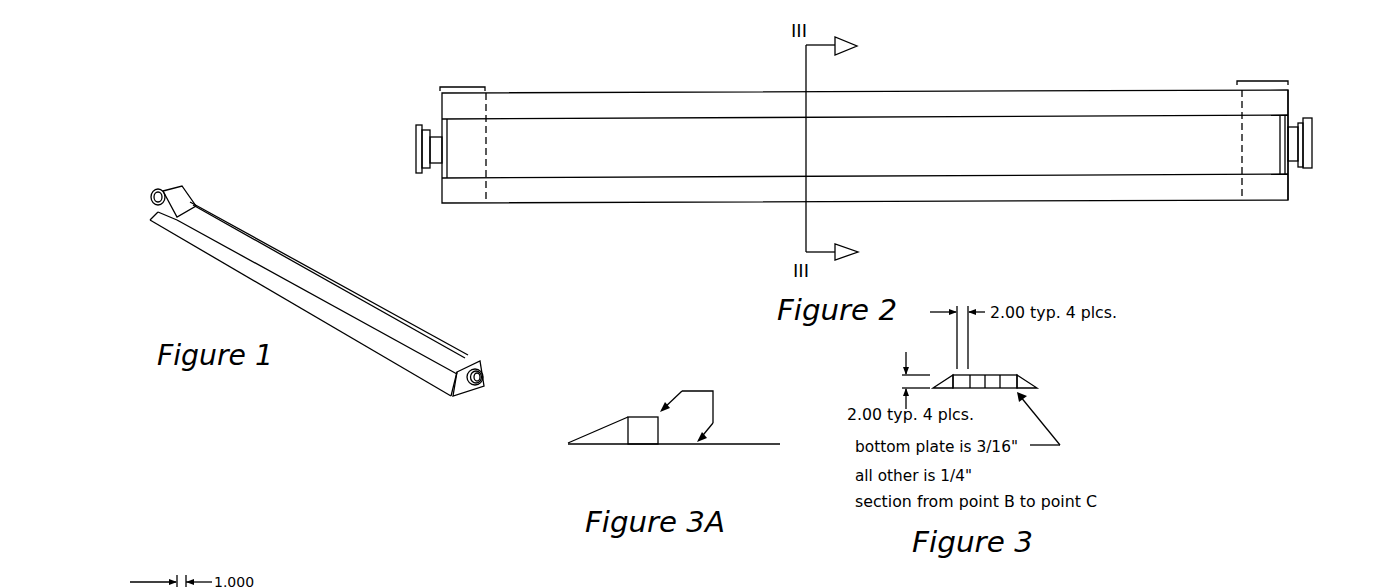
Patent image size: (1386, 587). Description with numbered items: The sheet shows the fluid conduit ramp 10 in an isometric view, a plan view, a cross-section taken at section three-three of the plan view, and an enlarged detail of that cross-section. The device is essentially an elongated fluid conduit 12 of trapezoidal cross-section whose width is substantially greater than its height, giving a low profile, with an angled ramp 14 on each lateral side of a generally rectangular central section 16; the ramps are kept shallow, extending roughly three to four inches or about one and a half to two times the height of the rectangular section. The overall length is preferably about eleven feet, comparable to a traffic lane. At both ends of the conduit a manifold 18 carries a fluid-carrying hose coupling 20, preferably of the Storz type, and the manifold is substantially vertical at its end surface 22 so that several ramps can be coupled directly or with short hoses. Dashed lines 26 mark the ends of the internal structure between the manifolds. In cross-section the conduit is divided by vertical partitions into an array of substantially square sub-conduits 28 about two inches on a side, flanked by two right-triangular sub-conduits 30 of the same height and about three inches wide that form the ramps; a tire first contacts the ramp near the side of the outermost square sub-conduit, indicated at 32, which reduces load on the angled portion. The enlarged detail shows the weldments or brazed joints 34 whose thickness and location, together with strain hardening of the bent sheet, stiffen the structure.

In FIG. 1, the fluid conduit ramp 10 is at (343, 247).
In FIG. 1, the elongated fluid conduit 12 is at (423, 348).
In FIG. 2, the elongated fluid conduit 12 is at (1147, 102).
In FIG. 1, the angled ramp 14 is at (387, 311).
In FIG. 2, the angled ramp 14 is at (1047, 101).
In FIG. 1, the rectangular central section 16 is at (343, 304).
In FIG. 2, the rectangular central section 16 is at (965, 137).
In FIG. 1, the manifold 18 is at (185, 201).
In FIG. 2, the manifold 18 is at (463, 86).
In FIG. 1, the hose coupling 20 is at (163, 186).
In FIG. 2, the hose coupling 20 is at (1312, 143).
In FIG. 2, the end surface 22 is at (1288, 107).
In FIG. 2, the dashed lines 26 is at (488, 107).
In FIG. 3, the substantially square sub-conduit 28 is at (992, 373).
In FIG. 3, the right-triangular sub-conduit 30 is at (947, 373).
In FIG. 3, the side of outermost substantially square sub-conduit 32 is at (1015, 374).
In FIG. 3A, the weldments or brazed joints 34 is at (627, 417).